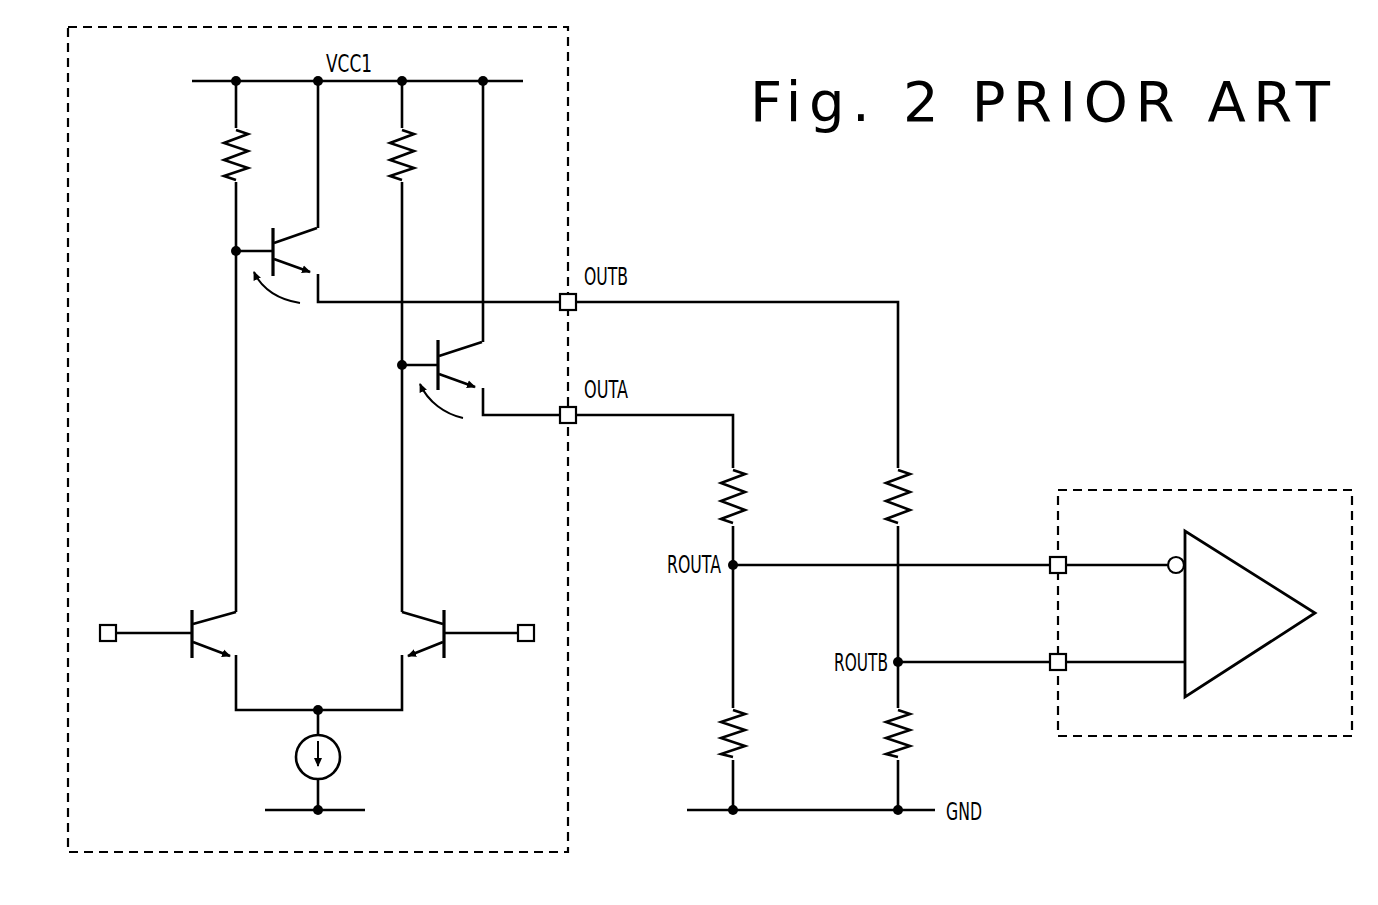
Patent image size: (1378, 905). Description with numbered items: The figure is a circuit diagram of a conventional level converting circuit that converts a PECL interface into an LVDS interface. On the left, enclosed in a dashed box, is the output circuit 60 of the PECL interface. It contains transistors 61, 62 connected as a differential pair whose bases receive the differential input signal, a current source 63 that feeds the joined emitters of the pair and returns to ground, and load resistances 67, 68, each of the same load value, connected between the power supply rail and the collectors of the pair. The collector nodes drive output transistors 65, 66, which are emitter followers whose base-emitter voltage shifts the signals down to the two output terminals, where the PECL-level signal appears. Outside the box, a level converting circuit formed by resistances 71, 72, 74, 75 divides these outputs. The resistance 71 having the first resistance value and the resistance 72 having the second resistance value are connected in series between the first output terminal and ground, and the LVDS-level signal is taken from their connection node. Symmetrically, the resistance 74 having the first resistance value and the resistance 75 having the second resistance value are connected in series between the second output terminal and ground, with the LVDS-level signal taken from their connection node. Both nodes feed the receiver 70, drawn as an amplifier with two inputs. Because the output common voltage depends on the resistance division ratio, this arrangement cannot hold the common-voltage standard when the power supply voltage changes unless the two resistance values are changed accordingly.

The output circuit 60 is at (568, 106).
The transistor 61 is at (204, 666).
The transistor 62 is at (422, 668).
The current source 63 is at (296, 764).
The output transistor 65 is at (311, 254).
The output transistor 66 is at (475, 364).
The load resistance 67 is at (222, 150).
The load resistance 68 is at (414, 158).
The receiver 70 is at (1190, 490).
The resistance 71 is at (718, 500).
The resistance 72 is at (718, 738).
The resistance 74 is at (912, 498).
The resistance 75 is at (912, 742).